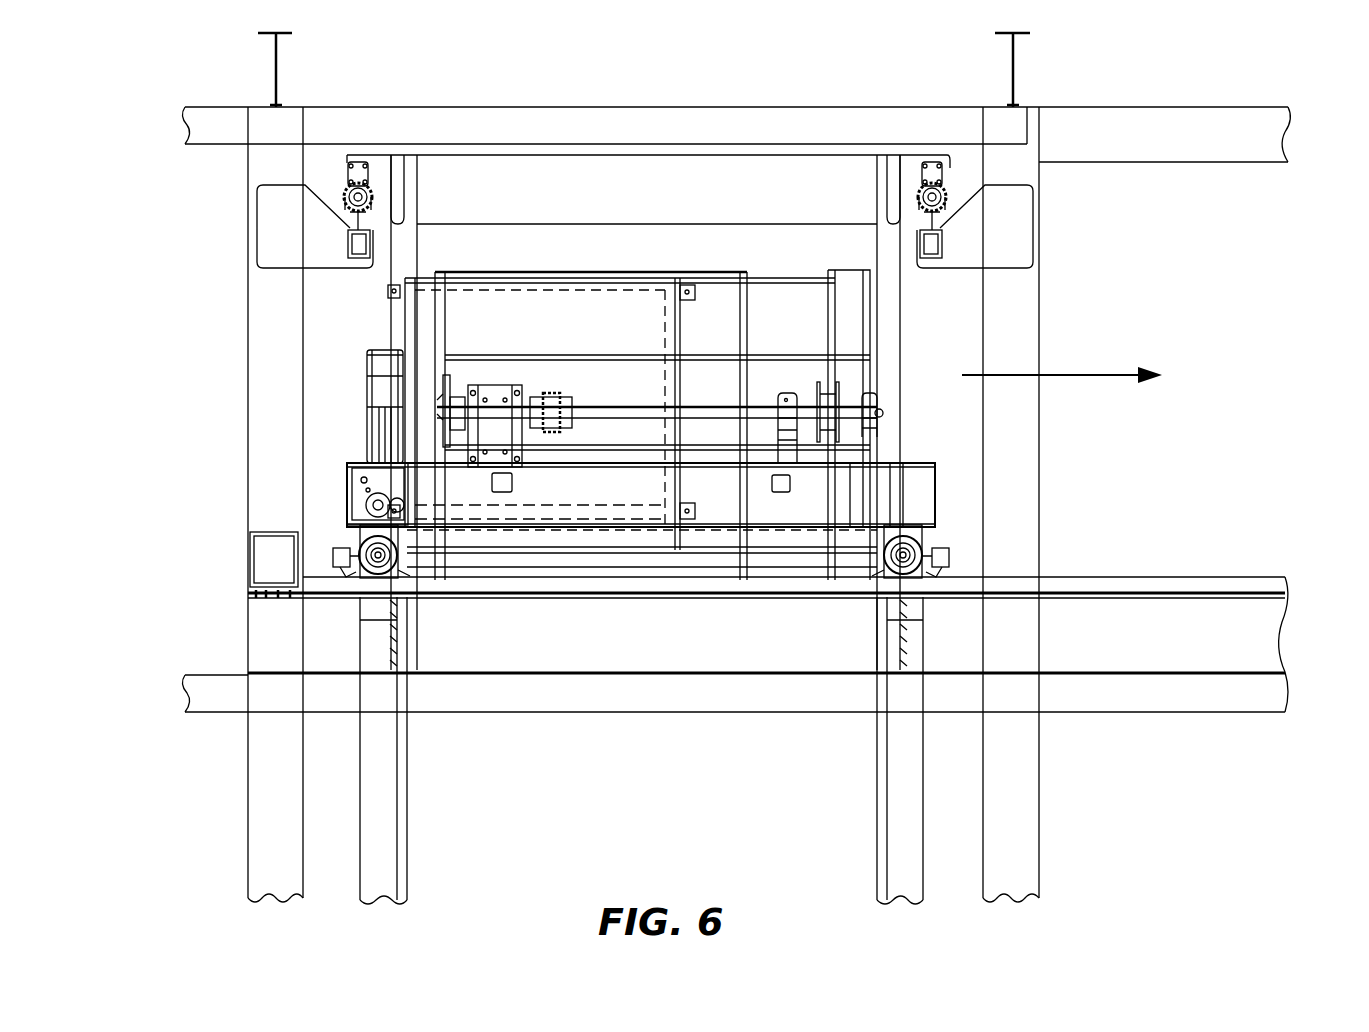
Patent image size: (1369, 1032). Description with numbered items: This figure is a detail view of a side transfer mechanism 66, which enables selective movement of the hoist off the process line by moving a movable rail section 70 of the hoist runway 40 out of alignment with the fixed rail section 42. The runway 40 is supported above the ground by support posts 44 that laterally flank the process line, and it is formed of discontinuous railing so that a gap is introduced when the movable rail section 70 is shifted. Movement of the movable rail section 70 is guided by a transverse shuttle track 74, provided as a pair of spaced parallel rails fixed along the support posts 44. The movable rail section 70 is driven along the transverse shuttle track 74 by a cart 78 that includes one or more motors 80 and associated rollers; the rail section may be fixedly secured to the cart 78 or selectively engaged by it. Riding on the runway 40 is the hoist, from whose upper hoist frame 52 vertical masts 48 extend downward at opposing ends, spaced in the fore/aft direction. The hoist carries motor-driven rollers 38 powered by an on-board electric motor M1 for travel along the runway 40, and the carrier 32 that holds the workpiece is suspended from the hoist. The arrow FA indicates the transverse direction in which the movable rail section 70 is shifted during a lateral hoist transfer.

The side transfer mechanism 66 is at (806, 84).
The cart 78 is at (623, 172).
The motor 80 is at (350, 186).
The transverse shuttle track 74 is at (347, 230).
The support post 44 is at (243, 497).
The vertical mast 48 is at (382, 805).
The fixed rail section 42 is at (1185, 647).
The movable rail section 70 is at (609, 653).
The runway 40 is at (1066, 566).
The upper hoist frame 52 is at (718, 494).
The electric motor M1 is at (383, 388).
The carrier 32 is at (356, 437).
The motor-driven roller 38 is at (384, 578).
The direction of travel force FA is at (1073, 377).